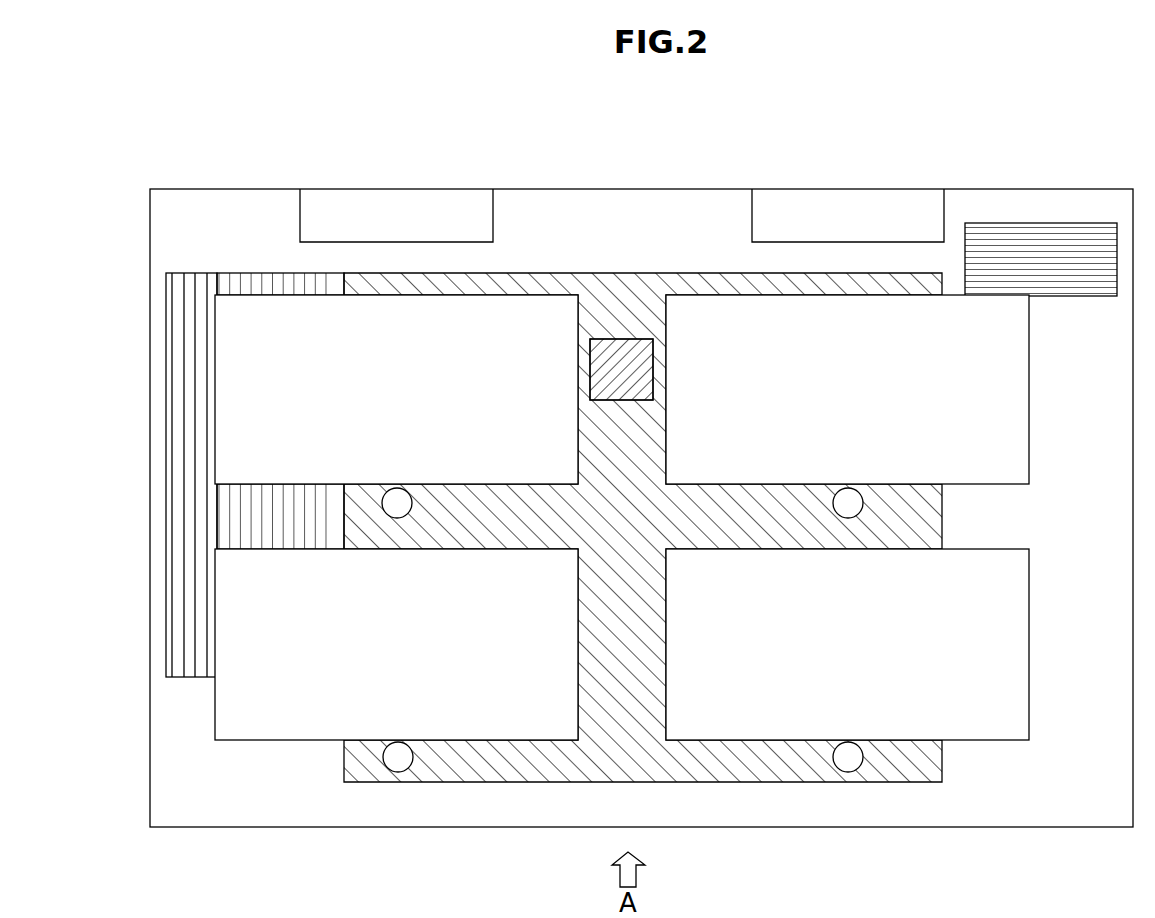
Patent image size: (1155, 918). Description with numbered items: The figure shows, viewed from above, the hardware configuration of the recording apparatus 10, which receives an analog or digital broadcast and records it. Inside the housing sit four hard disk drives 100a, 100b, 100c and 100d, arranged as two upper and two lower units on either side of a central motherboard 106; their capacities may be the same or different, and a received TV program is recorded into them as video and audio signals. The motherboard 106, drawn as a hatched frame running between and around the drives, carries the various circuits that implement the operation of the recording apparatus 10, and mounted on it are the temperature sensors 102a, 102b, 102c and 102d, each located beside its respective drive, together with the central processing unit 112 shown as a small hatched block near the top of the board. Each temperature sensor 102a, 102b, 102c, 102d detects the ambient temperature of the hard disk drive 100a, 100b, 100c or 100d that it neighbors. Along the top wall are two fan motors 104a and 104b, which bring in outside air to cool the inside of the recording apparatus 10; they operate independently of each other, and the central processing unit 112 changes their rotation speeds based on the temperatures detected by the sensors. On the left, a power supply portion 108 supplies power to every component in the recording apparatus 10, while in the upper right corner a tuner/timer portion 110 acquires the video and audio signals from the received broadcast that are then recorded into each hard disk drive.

The recording apparatus 10 is at (660, 165).
The hard disk drive 100a is at (332, 294).
The hard disk drive 100b is at (1030, 388).
The hard disk drive 100c is at (283, 741).
The hard disk drive 100d is at (1030, 640).
The temperature sensor 102a is at (382, 498).
The temperature sensor 102b is at (863, 502).
The temperature sensor 102c is at (400, 772).
The temperature sensor 102d is at (850, 772).
The fan motor 104a is at (494, 204).
The fan motor 104b is at (945, 198).
The motherboard 106 is at (685, 273).
The power supply portion 108 is at (229, 273).
The tuner/timer portion 110 is at (1092, 297).
The central processing unit 112 is at (614, 339).